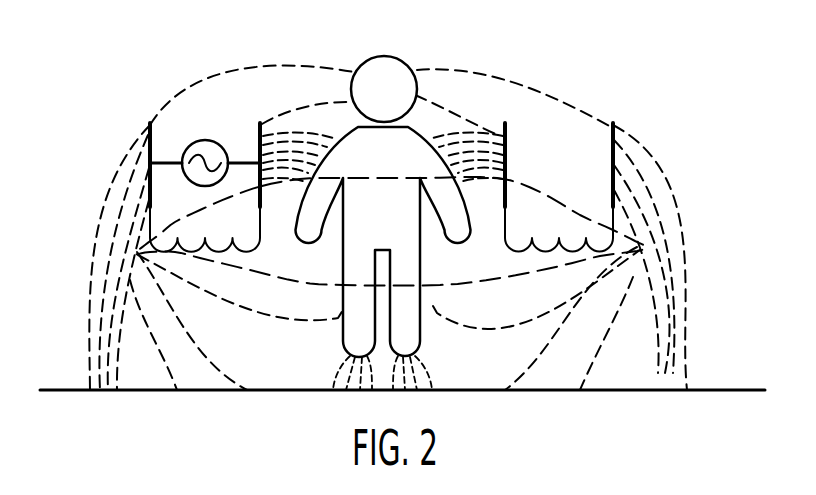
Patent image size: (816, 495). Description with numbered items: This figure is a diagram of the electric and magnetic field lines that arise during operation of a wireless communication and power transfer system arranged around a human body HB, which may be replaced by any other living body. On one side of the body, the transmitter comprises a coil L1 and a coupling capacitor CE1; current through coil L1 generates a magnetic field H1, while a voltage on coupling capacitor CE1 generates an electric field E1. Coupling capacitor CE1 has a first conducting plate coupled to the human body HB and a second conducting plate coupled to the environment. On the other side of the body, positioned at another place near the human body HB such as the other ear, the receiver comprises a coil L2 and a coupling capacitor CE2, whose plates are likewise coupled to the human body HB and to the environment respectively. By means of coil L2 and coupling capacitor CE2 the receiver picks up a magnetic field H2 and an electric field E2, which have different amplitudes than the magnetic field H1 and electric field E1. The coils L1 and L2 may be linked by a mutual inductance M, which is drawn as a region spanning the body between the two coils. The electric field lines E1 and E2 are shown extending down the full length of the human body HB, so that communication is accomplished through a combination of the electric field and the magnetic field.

The human body HB is at (383, 193).
The coupling capacitor CE1 is at (262, 138).
The coupling capacitor CE2 is at (613, 150).
The coil L1 is at (205, 228).
The coil L2 is at (559, 228).
The electric field E1 is at (91, 289).
The electric field E2 is at (683, 302).
The magnetic field H1 is at (317, 283).
The magnetic field H2 is at (470, 283).
The mutual inductance M is at (390, 208).